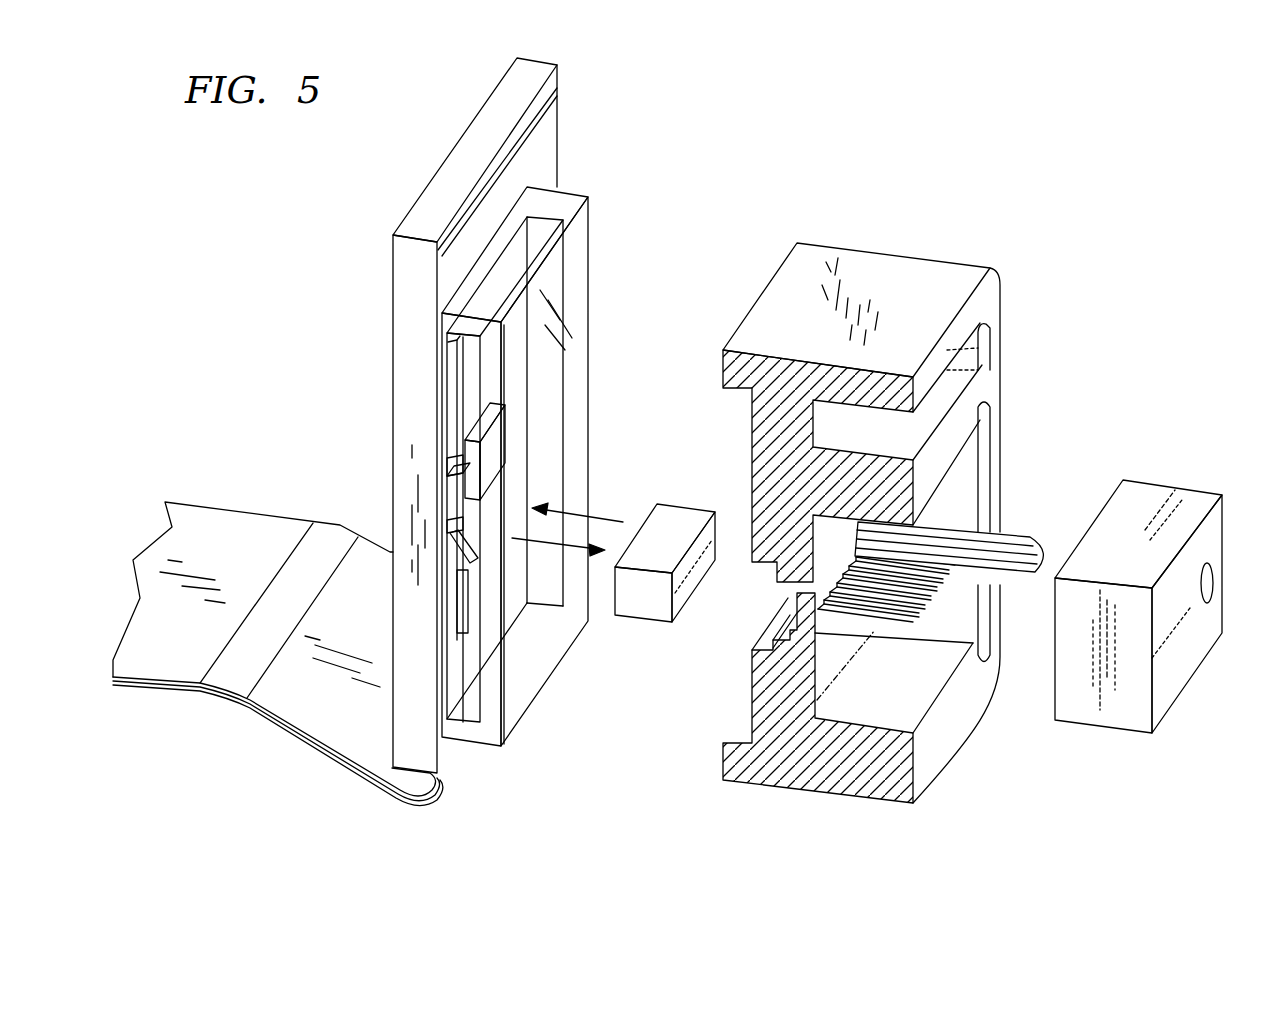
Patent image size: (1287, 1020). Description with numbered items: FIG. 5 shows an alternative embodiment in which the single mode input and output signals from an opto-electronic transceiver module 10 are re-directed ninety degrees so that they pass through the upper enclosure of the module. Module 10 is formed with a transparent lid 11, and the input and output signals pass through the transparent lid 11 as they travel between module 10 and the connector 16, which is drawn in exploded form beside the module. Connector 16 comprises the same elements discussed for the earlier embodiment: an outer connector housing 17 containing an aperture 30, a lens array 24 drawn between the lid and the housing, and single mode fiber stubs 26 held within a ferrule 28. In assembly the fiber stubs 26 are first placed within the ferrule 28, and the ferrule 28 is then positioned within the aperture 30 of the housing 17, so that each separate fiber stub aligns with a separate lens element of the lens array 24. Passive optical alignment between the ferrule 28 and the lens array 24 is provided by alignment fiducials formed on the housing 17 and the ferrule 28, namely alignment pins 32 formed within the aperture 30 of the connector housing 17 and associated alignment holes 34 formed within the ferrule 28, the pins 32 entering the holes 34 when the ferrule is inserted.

The module 10 is at (403, 291).
The transparent lid 11 is at (580, 247).
The connector 16 is at (589, 118).
The connector housing 17 is at (880, 267).
The lens array 24 is at (658, 603).
The single mode fiber stubs 26 is at (910, 623).
The ferrule 28 is at (1113, 715).
The aperture 30 is at (978, 477).
The alignment pins 32 is at (1015, 535).
The alignment holes 34 is at (1212, 582).